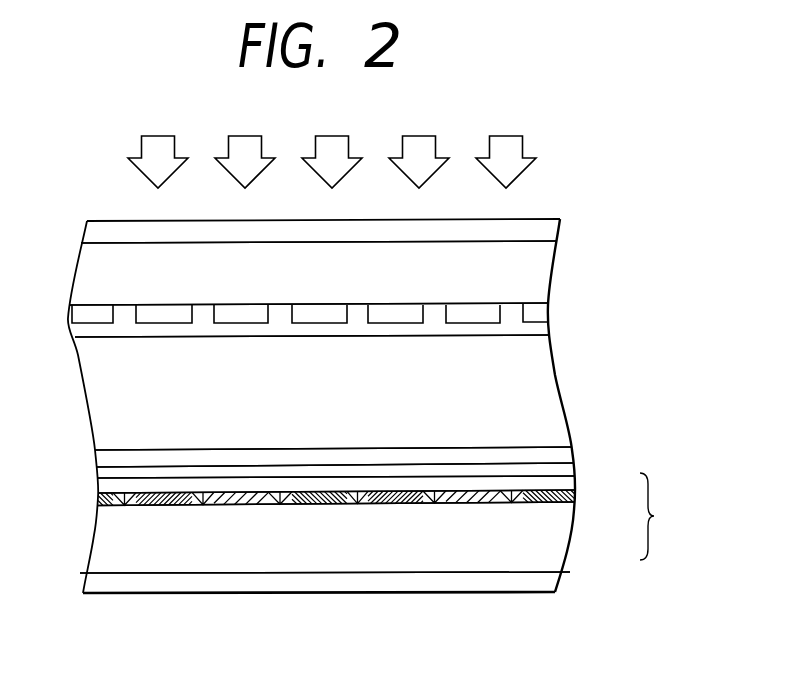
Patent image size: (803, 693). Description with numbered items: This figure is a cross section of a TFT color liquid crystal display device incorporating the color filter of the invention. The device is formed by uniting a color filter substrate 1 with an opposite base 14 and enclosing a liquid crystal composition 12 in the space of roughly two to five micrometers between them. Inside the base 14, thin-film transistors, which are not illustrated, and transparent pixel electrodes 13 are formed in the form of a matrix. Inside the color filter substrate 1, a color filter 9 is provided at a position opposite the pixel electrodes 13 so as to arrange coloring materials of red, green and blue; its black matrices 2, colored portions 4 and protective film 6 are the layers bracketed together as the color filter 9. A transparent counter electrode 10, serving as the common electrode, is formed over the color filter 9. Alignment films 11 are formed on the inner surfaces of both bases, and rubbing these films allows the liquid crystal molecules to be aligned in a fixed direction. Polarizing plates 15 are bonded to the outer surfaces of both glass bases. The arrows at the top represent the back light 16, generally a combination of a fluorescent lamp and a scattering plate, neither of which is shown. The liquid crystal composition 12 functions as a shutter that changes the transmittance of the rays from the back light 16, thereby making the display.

The color filter substrate 1 is at (555, 548).
The black matrices 2 is at (513, 503).
The colored portions 4 is at (175, 506).
The protective film 6 is at (562, 483).
The color filter 9 is at (657, 516).
The transparent counter electrode 10 is at (563, 470).
The alignment films 11 is at (540, 328).
The liquid crystal composition 12 is at (542, 376).
The transparent pixel electrodes 13 is at (540, 312).
The base 14 is at (540, 268).
The polarizing plates 15 is at (547, 230).
The back light 16 is at (523, 170).